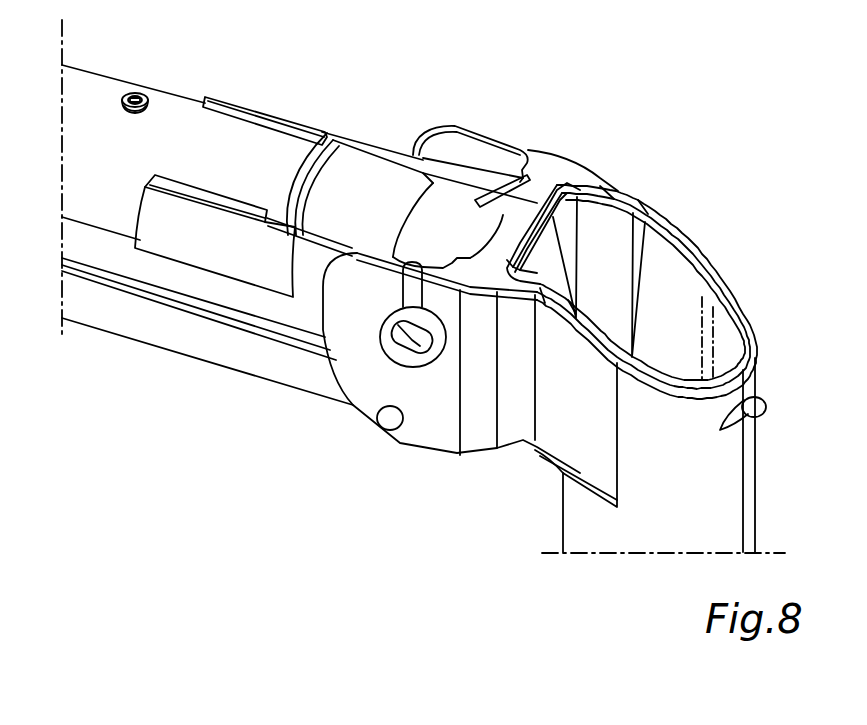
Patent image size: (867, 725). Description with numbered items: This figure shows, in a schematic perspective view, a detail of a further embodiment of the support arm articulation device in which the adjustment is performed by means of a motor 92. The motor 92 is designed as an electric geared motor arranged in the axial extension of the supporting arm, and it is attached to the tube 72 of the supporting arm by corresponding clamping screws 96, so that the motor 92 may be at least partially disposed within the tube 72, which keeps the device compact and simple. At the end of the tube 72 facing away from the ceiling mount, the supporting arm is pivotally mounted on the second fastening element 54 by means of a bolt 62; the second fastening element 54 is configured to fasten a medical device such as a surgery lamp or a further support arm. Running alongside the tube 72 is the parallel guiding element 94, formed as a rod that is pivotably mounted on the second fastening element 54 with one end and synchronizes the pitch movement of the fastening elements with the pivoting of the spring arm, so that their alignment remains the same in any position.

The second fastening element 54 is at (690, 285).
The bolt 62 is at (412, 340).
The tube 72 is at (184, 140).
The motor 92 is at (387, 190).
The parallel guiding element 94 is at (207, 347).
The clamping screw 96 is at (138, 90).